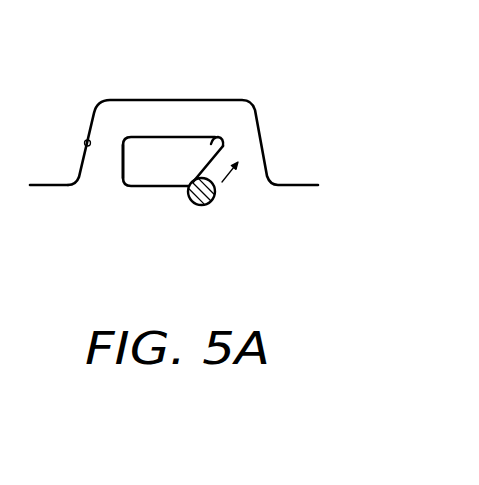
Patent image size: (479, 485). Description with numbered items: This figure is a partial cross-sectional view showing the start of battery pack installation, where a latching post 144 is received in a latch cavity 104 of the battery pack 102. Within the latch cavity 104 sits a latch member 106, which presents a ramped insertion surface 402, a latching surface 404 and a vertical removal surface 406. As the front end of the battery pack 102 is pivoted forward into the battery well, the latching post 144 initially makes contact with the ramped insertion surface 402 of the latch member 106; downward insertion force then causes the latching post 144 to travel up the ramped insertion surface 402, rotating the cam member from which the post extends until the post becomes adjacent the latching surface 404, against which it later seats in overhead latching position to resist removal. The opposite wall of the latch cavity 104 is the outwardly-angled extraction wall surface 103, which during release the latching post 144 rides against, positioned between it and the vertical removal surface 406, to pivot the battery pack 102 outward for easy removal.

The battery pack 102 is at (92, 116).
The extraction wall surface 103 is at (85, 142).
The latch cavity 104 is at (103, 175).
The latch member 106 is at (217, 138).
The latching post 144 is at (198, 205).
The ramped insertion surface 402 is at (223, 160).
The latching surface 404 is at (172, 137).
The vertical removal surface 406 is at (119, 153).